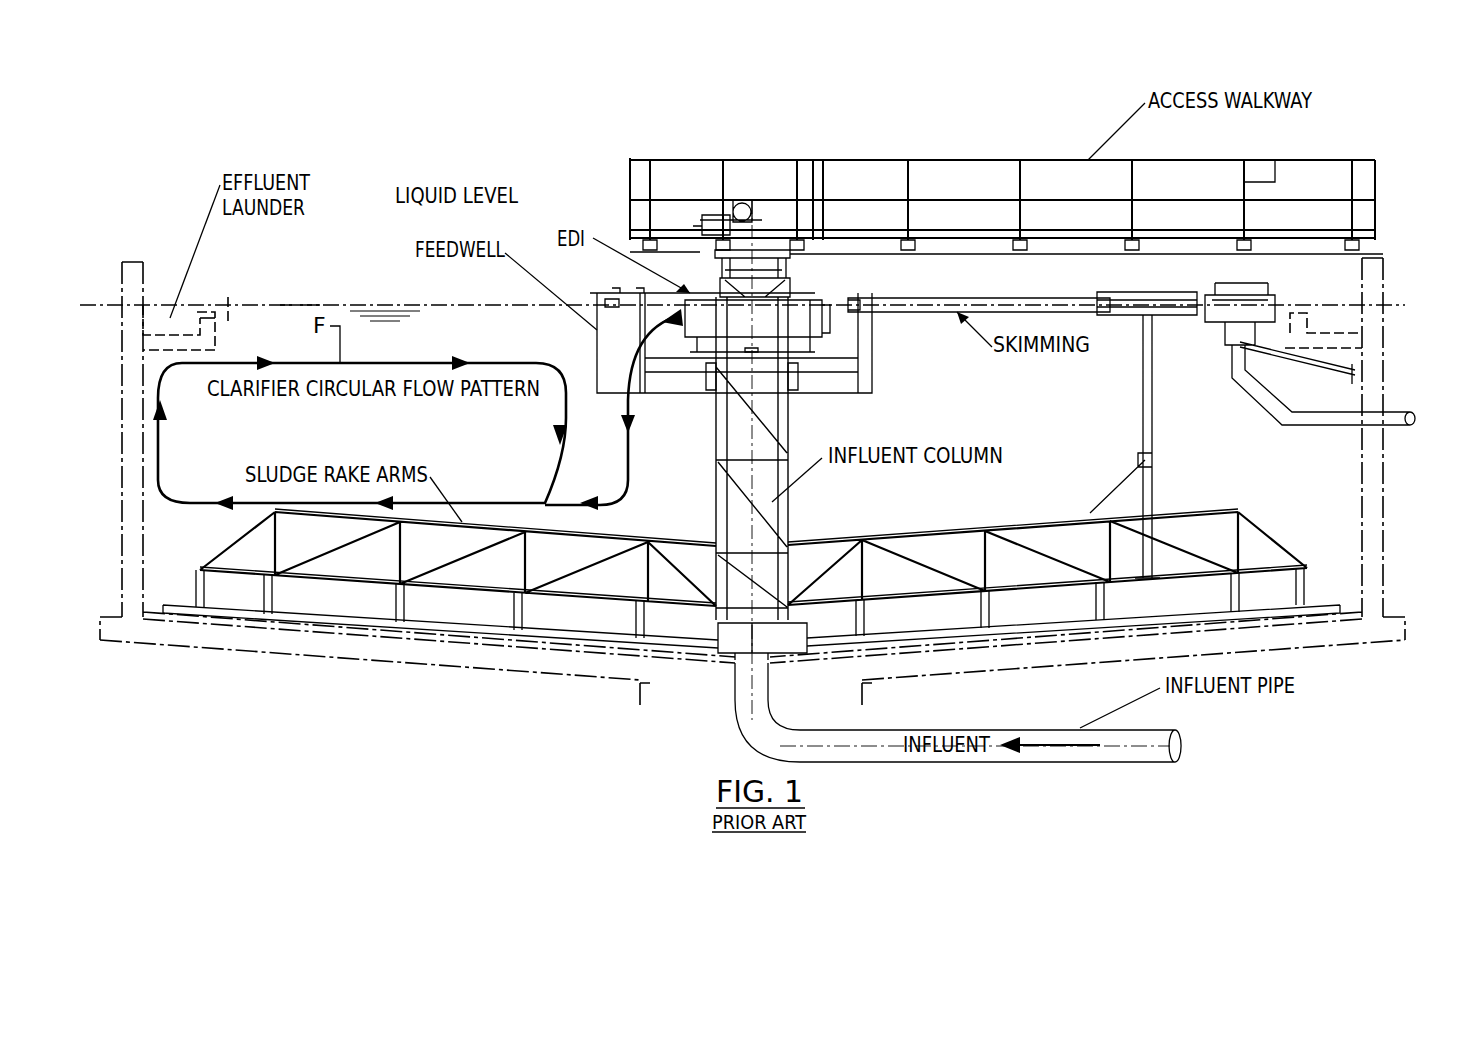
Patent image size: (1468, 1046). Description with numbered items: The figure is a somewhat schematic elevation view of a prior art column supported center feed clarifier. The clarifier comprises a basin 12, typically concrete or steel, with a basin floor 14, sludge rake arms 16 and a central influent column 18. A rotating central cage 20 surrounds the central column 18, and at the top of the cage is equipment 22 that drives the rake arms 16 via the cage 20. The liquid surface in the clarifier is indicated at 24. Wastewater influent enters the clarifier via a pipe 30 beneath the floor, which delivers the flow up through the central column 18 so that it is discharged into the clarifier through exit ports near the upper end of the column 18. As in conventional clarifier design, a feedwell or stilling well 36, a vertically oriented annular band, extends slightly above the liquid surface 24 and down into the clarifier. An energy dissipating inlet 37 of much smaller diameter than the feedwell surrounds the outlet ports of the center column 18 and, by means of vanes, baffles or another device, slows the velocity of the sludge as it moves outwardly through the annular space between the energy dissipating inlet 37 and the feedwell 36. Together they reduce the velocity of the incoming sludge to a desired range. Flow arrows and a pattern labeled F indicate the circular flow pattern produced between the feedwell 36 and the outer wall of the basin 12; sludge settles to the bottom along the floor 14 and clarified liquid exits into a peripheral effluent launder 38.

The basin 12 is at (1385, 518).
The basin floor 14 is at (1298, 617).
The sludge rake arms 16 is at (1243, 590).
The central influent column 18 is at (790, 413).
The rotating central cage 20 is at (720, 440).
The equipment 22 is at (753, 213).
The liquid surface 24 is at (298, 304).
The pipe 30 is at (915, 760).
The feedwell 36 is at (597, 362).
The energy dissipating inlet 37 is at (822, 330).
The peripheral effluent launder 38 is at (185, 317).